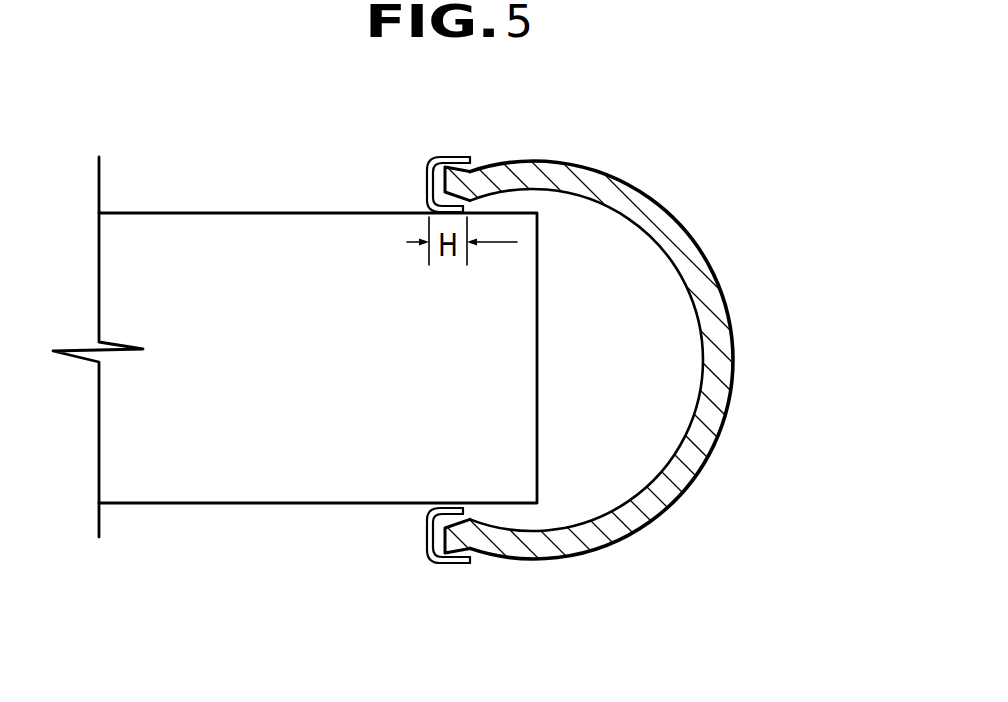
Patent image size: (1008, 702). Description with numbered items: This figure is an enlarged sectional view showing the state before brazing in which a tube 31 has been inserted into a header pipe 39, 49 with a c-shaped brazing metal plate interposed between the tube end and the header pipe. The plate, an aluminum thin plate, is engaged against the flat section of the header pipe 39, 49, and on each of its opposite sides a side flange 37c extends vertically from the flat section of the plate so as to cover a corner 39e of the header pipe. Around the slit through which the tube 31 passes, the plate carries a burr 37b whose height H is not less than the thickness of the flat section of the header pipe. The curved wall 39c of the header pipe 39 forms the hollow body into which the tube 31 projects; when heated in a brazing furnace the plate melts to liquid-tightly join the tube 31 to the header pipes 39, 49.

The tube 31 is at (213, 492).
The burr 37b is at (477, 516).
The side flange 37c is at (445, 158).
The header pipe 39 is at (504, 351).
The header pipe 49 is at (504, 351).
The curved hollow portion of seal 39c is at (722, 418).
The corner of header pipe 39e is at (493, 167).